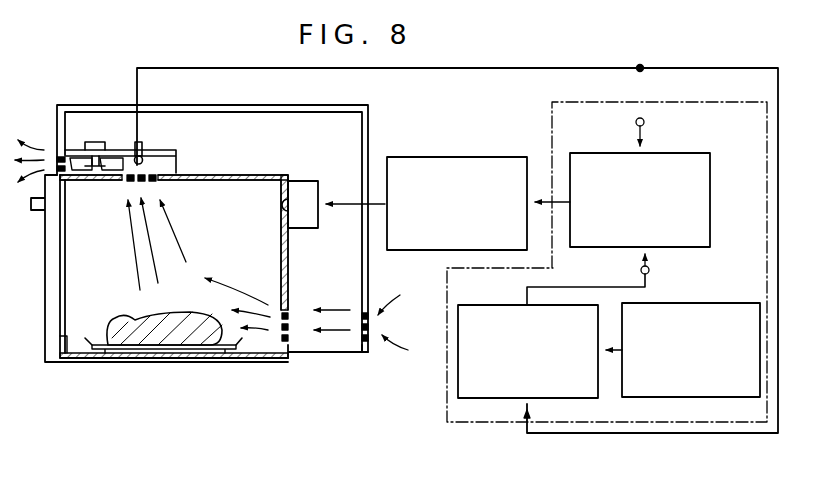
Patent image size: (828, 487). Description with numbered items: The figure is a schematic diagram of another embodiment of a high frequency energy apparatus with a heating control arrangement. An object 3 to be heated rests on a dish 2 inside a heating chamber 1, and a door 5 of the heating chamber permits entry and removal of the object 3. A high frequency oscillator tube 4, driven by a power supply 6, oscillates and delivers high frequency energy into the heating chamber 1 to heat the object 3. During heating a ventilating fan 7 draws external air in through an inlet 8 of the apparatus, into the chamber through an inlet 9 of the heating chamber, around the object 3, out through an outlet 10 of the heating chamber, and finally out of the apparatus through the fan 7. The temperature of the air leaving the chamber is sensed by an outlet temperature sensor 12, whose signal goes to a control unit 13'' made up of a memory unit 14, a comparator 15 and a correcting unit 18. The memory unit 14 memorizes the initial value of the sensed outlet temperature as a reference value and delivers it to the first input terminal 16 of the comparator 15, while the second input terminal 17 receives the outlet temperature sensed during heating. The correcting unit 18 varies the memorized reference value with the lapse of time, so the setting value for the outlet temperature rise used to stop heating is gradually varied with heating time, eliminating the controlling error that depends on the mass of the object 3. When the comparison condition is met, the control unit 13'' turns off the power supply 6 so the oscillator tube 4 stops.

The heating chamber 1 is at (78, 288).
The dish 2 is at (100, 350).
The object to be heated 3 is at (135, 318).
The high frequency oscillator tube 4 is at (300, 181).
The door 5 is at (46, 250).
The power supply 6 is at (450, 157).
The ventilating fan 7 is at (90, 148).
The inlet of the high frequency energy apparatus 8 is at (372, 342).
The inlet of the heating chamber 9 is at (289, 345).
The outlet of the heating chamber 10 is at (158, 178).
The outlet temperature sensor 12 is at (146, 156).
The control unit 13'' is at (579, 262).
The memory unit 14 is at (498, 305).
The comparator 15 is at (673, 153).
The first input terminal 16 is at (649, 270).
The second input terminal 17 is at (636, 122).
The correcting unit 18 is at (718, 303).